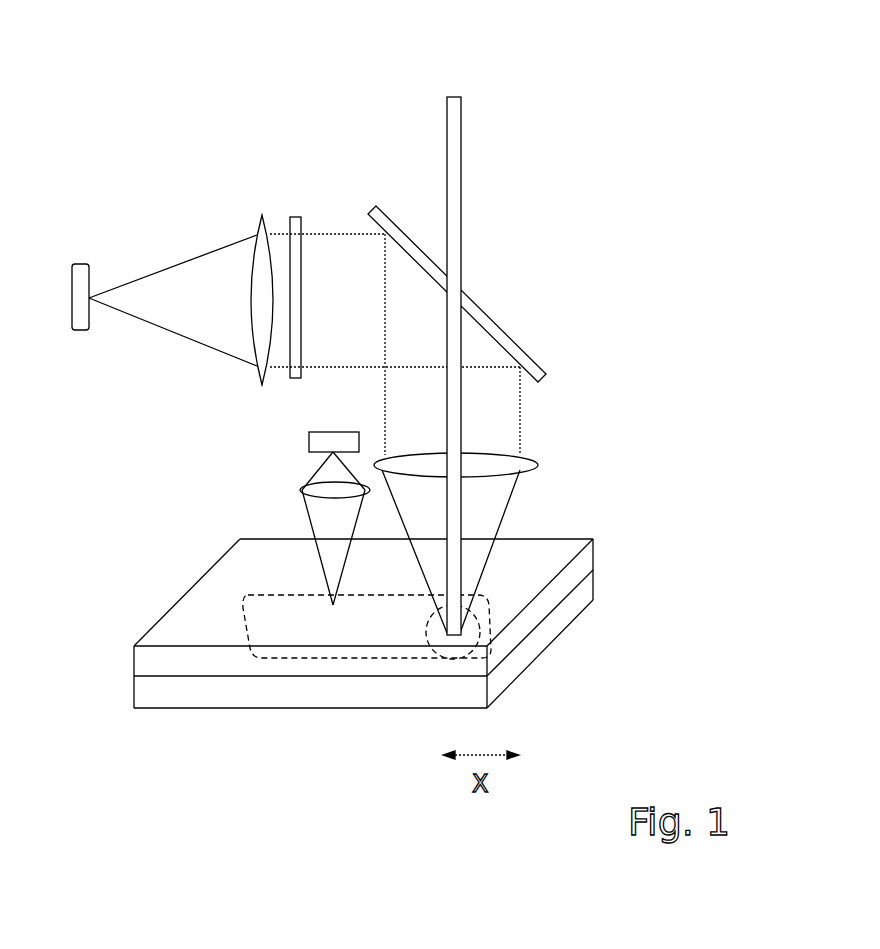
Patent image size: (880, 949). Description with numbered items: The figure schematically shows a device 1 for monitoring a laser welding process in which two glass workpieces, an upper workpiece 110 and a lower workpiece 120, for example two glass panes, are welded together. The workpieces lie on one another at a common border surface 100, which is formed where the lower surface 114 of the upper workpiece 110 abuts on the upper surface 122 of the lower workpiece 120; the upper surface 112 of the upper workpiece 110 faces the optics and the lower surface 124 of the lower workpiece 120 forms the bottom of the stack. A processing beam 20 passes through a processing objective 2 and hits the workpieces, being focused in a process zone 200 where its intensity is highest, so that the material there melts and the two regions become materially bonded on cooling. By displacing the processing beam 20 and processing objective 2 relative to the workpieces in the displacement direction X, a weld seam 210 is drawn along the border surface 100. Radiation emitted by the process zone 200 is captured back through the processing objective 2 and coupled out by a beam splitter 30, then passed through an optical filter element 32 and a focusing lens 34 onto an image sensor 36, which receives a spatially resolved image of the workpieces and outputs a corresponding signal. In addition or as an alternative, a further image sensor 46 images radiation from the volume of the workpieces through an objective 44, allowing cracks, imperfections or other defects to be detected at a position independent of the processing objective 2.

The device for monitoring a welding process 1 is at (530, 130).
The processing objective 2 is at (530, 463).
The processing beam 20 is at (462, 178).
The beam splitter 30 is at (498, 330).
The optical filter element 32 is at (297, 217).
The focusing lens 34 is at (262, 217).
The image sensor 36 is at (82, 270).
The objective 44 is at (300, 490).
The image sensor 46 is at (313, 437).
The border surface 100 is at (420, 657).
The upper workpiece 110 is at (585, 560).
The upper surface of the upper workpiece 112 is at (557, 545).
The lower surface of the upper workpiece 114 is at (470, 677).
The lower workpiece 120 is at (585, 593).
The upper surface of the lower workpiece 122 is at (390, 678).
The lower surface of the lower workpiece 124 is at (207, 710).
The process zone 200 is at (485, 623).
The weld seam 210 is at (357, 632).